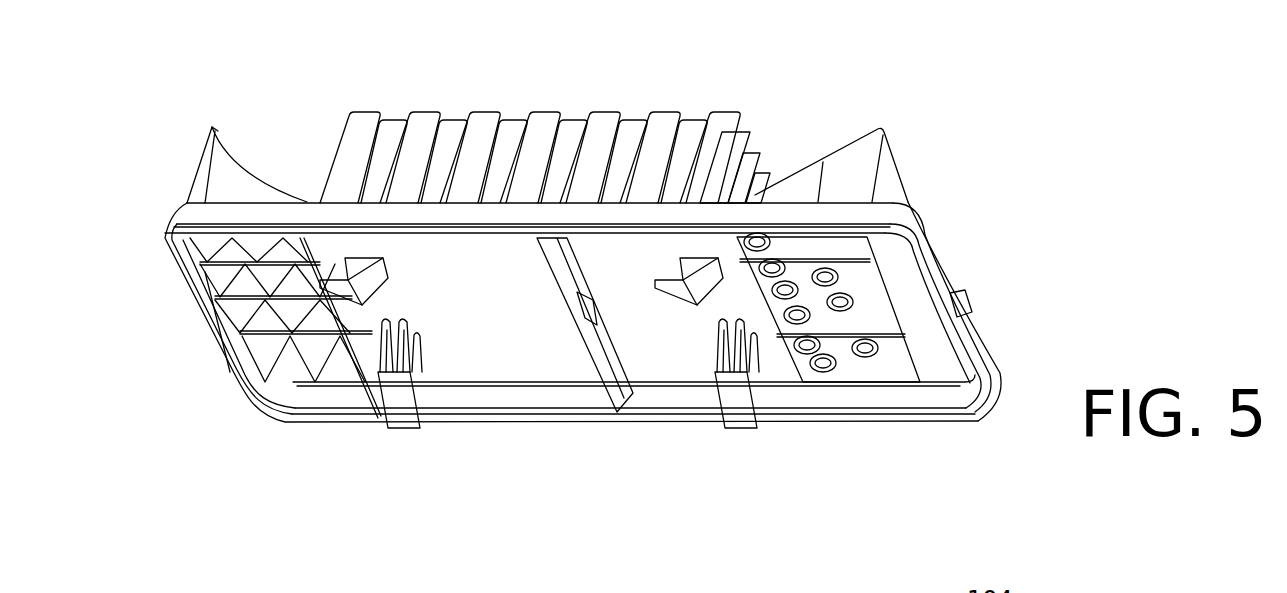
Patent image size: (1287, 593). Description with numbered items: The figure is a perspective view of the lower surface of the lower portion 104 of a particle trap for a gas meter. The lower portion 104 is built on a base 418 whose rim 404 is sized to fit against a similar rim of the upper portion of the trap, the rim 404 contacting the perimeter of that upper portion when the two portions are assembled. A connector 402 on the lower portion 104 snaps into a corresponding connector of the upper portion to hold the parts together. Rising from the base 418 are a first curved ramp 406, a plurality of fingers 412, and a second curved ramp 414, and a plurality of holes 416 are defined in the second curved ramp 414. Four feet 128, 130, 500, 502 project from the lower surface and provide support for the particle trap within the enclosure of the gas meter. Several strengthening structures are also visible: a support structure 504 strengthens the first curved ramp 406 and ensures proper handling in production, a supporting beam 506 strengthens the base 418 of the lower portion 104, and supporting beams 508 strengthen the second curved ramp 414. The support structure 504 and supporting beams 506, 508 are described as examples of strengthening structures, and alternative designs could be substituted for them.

The lower portion 104 is at (983, 80).
The foot 128 is at (330, 288).
The foot 130 is at (665, 278).
The connector 402 is at (970, 308).
The rim 404 is at (478, 227).
The first curved ramp 406 is at (243, 173).
The plurality of fingers 412 is at (487, 112).
The second curved ramp 414 is at (823, 160).
The plurality of holes 416 is at (860, 363).
The base 418 is at (462, 338).
The foot 500 is at (390, 428).
The foot 502 is at (735, 427).
The support structure 504 is at (243, 250).
The supporting beam 506 is at (587, 338).
The supporting beams 508 is at (833, 337).